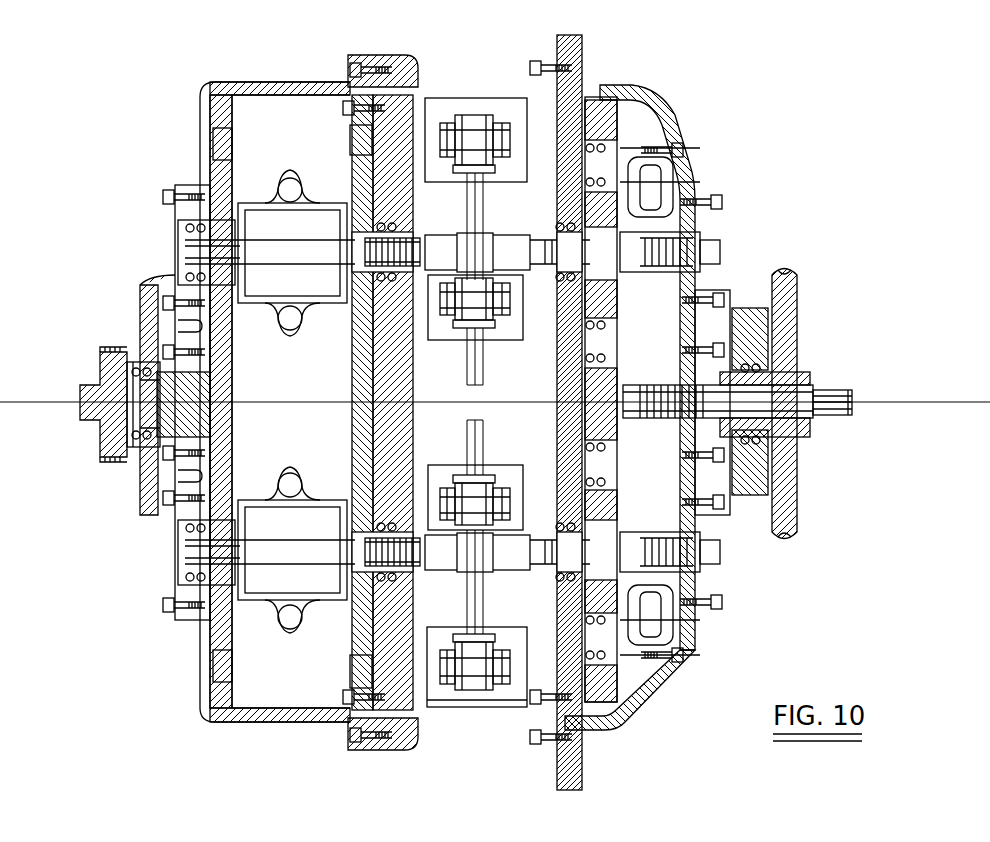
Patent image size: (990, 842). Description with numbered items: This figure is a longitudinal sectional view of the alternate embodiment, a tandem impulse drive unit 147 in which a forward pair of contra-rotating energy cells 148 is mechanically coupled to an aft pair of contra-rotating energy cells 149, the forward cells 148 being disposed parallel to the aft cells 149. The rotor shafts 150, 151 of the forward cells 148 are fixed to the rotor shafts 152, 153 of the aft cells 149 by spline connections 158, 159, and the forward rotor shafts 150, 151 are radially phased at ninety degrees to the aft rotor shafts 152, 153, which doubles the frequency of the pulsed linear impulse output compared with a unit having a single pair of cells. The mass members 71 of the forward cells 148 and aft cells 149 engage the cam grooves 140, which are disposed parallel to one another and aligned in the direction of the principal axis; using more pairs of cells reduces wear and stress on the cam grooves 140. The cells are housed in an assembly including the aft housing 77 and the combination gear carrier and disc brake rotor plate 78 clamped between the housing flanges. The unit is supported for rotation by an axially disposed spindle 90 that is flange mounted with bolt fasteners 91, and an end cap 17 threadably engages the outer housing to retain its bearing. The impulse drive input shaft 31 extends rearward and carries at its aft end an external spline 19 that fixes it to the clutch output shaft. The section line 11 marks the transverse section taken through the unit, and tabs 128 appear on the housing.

The section line 11- 11 is at (163, 547).
The end cap 17 is at (72, 430).
The external spline 19 is at (837, 420).
The impulse drive input shaft 31 is at (815, 385).
The mass members 71 is at (432, 177).
The aft housing 77 is at (655, 700).
The gear carrier and disc brake rotor plate 78 is at (583, 768).
The spindle 90 is at (137, 453).
The bolt fasteners 91 is at (782, 467).
The mounting tabs 128 is at (304, 333).
The cam grooves 140 is at (420, 150).
The tandem impulse drive unit 147 is at (692, 675).
The forward pair of contra-rotating energy cells 148 is at (230, 640).
The aft pair of contra-rotating energy cells 149 is at (478, 708).
The rotor shaft 150 is at (298, 510).
The rotor shaft 151 is at (301, 207).
The rotor shaft 152 is at (492, 577).
The rotor shaft 153 is at (524, 225).
The spline connection 158 is at (365, 200).
The spline connection 159 is at (345, 592).